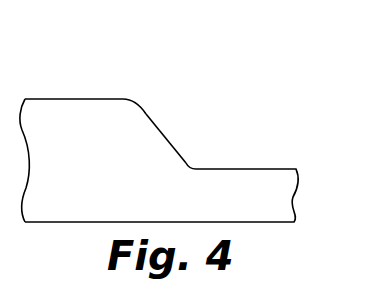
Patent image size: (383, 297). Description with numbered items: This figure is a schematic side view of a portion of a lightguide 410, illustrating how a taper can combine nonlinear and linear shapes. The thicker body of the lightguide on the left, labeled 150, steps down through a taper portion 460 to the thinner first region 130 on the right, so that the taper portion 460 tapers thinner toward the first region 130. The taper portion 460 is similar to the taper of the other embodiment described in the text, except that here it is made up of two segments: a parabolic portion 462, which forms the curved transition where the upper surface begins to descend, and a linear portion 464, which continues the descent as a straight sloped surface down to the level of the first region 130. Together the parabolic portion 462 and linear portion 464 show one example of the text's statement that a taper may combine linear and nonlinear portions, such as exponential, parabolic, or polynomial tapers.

The lightguide 410 is at (252, 71).
The first portion 150 is at (64, 98).
The first region 130 is at (278, 168).
The taper portion 460 is at (150, 120).
The parabolic portion 462 is at (122, 102).
The linear portion 464 is at (182, 157).